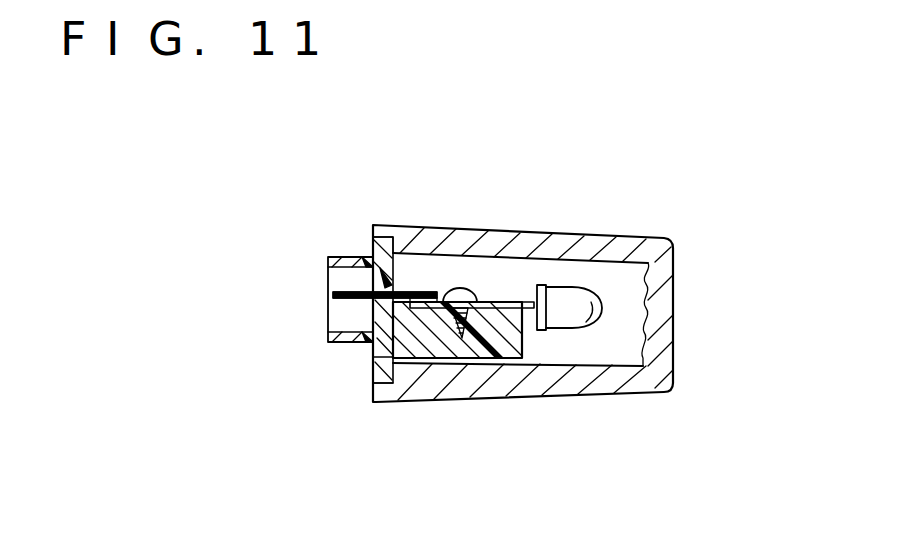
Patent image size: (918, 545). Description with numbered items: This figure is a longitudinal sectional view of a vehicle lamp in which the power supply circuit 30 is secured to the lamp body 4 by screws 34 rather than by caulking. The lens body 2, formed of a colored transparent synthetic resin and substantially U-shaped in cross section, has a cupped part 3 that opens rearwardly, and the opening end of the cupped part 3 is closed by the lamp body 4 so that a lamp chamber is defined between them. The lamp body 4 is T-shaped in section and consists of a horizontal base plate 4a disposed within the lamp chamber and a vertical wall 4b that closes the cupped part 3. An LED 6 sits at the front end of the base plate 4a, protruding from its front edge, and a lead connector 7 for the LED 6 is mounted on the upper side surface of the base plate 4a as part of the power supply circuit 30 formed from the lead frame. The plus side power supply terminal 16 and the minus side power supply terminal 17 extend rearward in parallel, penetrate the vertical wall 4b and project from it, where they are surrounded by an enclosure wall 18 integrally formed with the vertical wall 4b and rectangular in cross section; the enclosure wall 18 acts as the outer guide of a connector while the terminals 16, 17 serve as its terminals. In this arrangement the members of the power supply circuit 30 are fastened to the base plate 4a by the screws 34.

The lens body 2 is at (607, 240).
The cupped part 3 is at (592, 360).
The lamp body 4 is at (372, 370).
The base plate 4a is at (477, 360).
The vertical wall 4b is at (372, 318).
The LED 6 is at (604, 306).
The lead connector 7 is at (533, 257).
The plus side power supply terminal 16 is at (333, 292).
The minus side power supply terminal 17 is at (385, 295).
The enclosure wall 18 is at (344, 257).
The power supply circuit 30 is at (486, 300).
The screw 34 is at (459, 288).